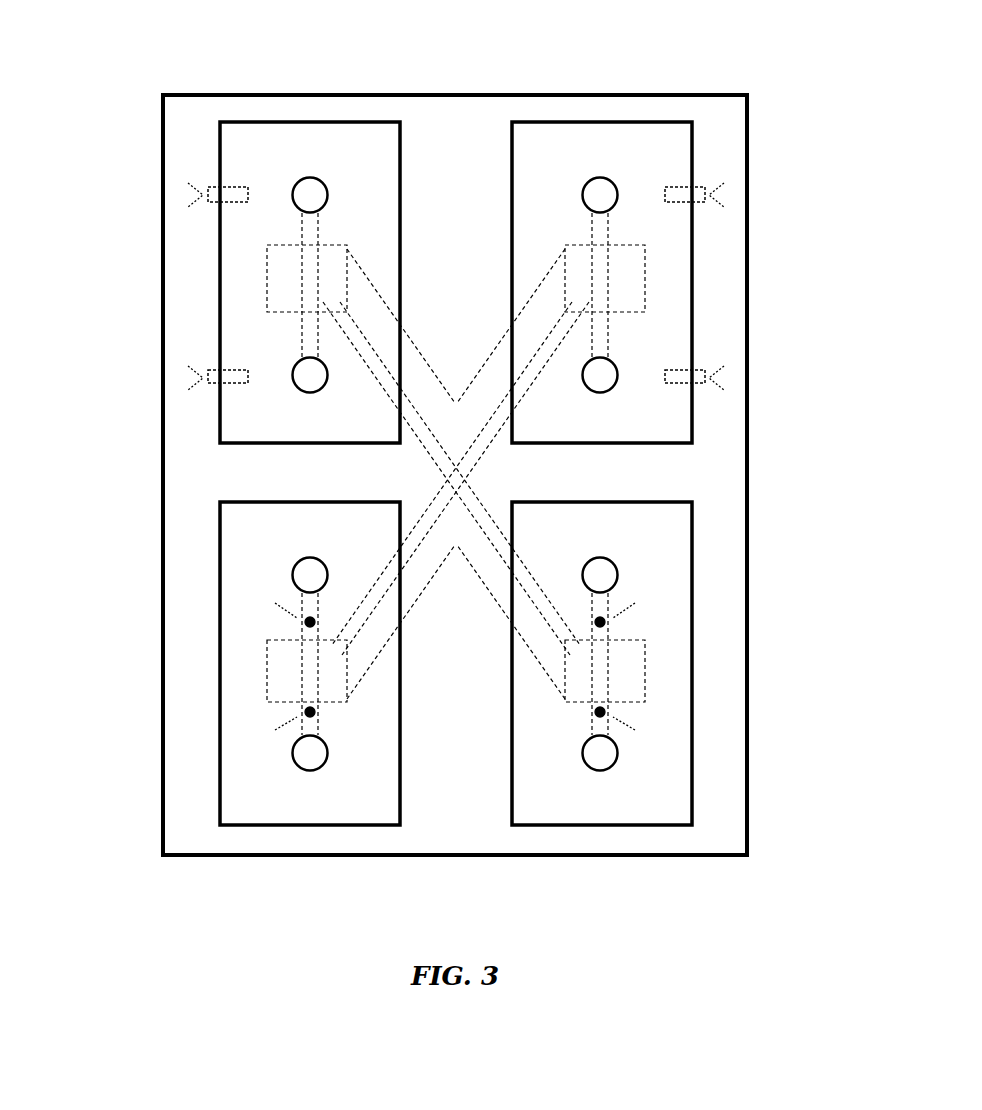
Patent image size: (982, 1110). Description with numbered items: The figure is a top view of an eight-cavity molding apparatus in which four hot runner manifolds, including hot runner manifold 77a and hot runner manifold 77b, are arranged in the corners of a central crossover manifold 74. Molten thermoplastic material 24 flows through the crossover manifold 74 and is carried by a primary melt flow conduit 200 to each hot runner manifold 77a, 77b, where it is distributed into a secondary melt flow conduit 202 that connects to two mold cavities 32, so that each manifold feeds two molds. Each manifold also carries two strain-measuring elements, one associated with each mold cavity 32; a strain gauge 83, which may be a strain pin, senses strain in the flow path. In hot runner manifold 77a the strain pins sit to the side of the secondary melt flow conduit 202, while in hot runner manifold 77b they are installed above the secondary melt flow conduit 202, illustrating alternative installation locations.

The molten thermoplastic material 24 is at (462, 478).
The mold cavity 32 is at (311, 190).
The crossover manifold 74 is at (403, 495).
The hot runner manifold 77a is at (360, 165).
The hot runner manifold 77b is at (347, 787).
The strain gauge 83 is at (220, 193).
The primary melt flow conduit 200 is at (418, 427).
The secondary melt flow conduit 202 is at (305, 235).